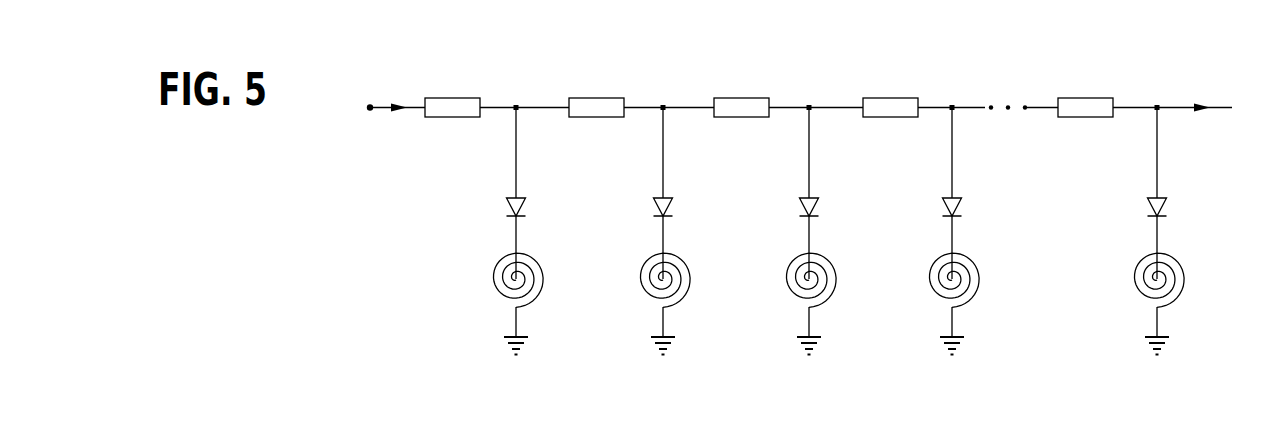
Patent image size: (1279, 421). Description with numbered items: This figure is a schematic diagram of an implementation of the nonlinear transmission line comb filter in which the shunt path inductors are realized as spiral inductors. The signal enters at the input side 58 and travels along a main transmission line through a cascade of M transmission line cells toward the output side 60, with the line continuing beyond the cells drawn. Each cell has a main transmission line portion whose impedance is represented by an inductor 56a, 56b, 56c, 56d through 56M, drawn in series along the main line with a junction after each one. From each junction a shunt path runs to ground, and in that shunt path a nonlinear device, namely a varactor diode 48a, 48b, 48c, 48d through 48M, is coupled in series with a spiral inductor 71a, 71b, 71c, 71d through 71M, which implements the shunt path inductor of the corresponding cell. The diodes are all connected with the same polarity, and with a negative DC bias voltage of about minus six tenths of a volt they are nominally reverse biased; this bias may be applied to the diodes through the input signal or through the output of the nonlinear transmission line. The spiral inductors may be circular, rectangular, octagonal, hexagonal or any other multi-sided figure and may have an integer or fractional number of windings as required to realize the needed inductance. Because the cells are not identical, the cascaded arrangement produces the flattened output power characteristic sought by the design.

The input terminal 58 is at (370, 107).
The output terminal 60 is at (1180, 109).
The inductor 56a is at (453, 98).
The varactor diode 48a is at (520, 198).
The spiral inductor 71a is at (499, 302).
The inductor 56b is at (597, 98).
The varactor diode 48b is at (667, 198).
The spiral inductor 71b is at (646, 302).
The inductor 56c is at (742, 98).
The varactor diode 48c is at (813, 198).
The spiral inductor 71c is at (792, 302).
The inductor 56d is at (891, 98).
The varactor diode 48d is at (956, 198).
The spiral inductor 71d is at (935, 302).
The inductor 56M is at (1086, 98).
The varactor diode 48M is at (1161, 198).
The spiral inductor 71M is at (1140, 302).